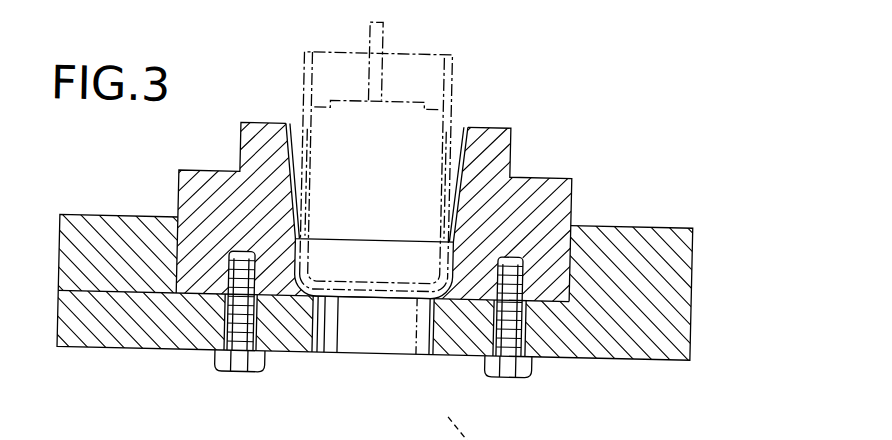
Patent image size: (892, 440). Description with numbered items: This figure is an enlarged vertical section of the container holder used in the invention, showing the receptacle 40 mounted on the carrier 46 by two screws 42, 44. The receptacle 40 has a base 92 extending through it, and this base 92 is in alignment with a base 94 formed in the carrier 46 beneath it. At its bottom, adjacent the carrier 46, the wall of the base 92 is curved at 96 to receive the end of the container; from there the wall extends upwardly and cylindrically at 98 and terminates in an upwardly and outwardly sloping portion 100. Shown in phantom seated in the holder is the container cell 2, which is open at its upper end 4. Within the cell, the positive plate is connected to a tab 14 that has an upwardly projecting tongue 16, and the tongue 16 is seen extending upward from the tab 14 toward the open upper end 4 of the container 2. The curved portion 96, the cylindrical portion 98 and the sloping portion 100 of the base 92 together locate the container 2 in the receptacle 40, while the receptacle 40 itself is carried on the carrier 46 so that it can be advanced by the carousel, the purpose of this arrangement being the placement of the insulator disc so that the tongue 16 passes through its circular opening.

The container cell 2 is at (460, 88).
The upper end 4 is at (431, 70).
The tab 14 is at (344, 84).
The tongue 16 is at (376, 32).
The receptacle 40 is at (550, 196).
The screw 42 is at (242, 361).
The screw 44 is at (510, 360).
The carrier 46 is at (662, 280).
The base 92 is at (392, 196).
The base 94 is at (397, 329).
The curved wall portion 96 is at (447, 290).
The cylindrical portion 98 is at (450, 250).
The upwardly and outwardly sloping portion 100 is at (284, 147).